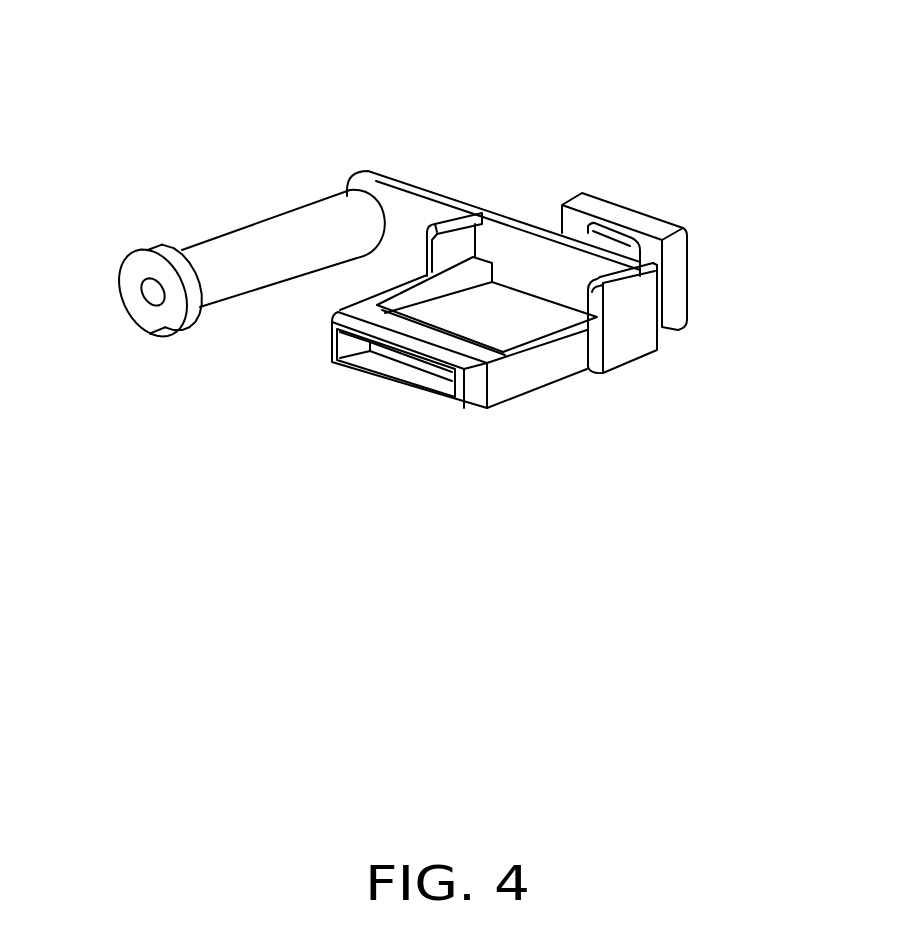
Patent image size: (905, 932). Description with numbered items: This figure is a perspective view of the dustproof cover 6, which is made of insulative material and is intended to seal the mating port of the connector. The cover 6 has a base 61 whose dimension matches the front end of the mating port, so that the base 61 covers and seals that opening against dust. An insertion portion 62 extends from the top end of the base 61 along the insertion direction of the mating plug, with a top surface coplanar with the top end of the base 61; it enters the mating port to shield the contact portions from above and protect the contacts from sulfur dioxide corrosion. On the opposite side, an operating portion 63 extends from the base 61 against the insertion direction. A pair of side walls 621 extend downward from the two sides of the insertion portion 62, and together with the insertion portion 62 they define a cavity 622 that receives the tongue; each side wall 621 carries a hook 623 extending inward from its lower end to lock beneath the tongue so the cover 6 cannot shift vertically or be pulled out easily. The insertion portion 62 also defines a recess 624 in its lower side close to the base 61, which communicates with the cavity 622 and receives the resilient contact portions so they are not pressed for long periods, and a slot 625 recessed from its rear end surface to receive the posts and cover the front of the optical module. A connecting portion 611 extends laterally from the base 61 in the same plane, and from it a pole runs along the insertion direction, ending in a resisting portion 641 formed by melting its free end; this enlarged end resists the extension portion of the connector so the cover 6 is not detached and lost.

The dustproof cover 6 is at (240, 165).
The base 61 is at (508, 222).
The connecting portion 611 is at (395, 208).
The resisting portion 641 is at (185, 272).
The insertion portion 62 is at (512, 377).
The side wall 621 is at (622, 326).
The cavity 622 is at (548, 280).
The hook 623 is at (640, 259).
The recess 624 is at (440, 310).
The slot 625 is at (420, 368).
The operating portion 63 is at (625, 216).